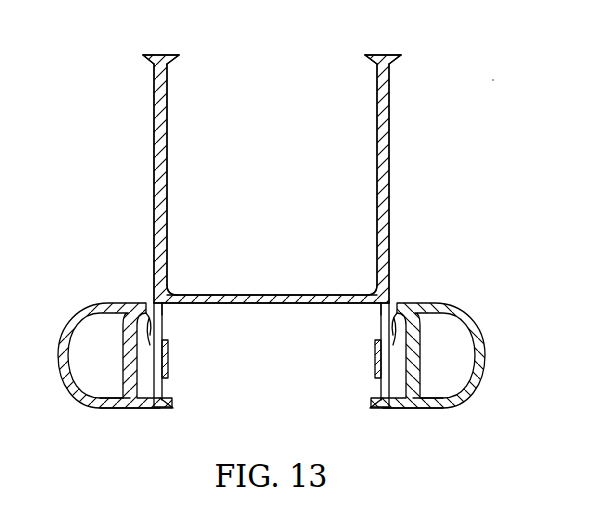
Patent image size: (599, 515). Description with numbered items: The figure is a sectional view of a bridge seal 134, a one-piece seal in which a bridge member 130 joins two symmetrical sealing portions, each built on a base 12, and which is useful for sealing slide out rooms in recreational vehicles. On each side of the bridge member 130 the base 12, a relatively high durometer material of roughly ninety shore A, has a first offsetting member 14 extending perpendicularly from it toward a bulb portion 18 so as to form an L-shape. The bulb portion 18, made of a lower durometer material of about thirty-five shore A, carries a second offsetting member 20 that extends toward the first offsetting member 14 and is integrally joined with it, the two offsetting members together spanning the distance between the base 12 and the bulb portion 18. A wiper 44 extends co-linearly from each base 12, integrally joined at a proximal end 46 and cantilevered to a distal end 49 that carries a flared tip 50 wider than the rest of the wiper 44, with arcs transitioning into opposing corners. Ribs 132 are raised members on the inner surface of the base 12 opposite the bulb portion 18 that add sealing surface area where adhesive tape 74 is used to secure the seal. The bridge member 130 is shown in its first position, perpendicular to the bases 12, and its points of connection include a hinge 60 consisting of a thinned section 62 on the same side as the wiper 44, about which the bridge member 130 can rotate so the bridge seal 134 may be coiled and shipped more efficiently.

The base 12 is at (165, 340).
The first offsetting member 14 is at (159, 412).
The bulb portion 18 is at (85, 318).
The second offsetting member 20 is at (121, 410).
The wiper 44 is at (140, 95).
The proximal end 46 is at (155, 268).
The distal end 49 is at (160, 53).
The flared tip 50 is at (136, 52).
The hinge 60 is at (173, 308).
The thinned section 62 is at (174, 293).
The adhesive tape 74 is at (170, 372).
The bridge member 130 is at (271, 295).
The rib 132 is at (174, 405).
The bridge seal 134 is at (494, 80).